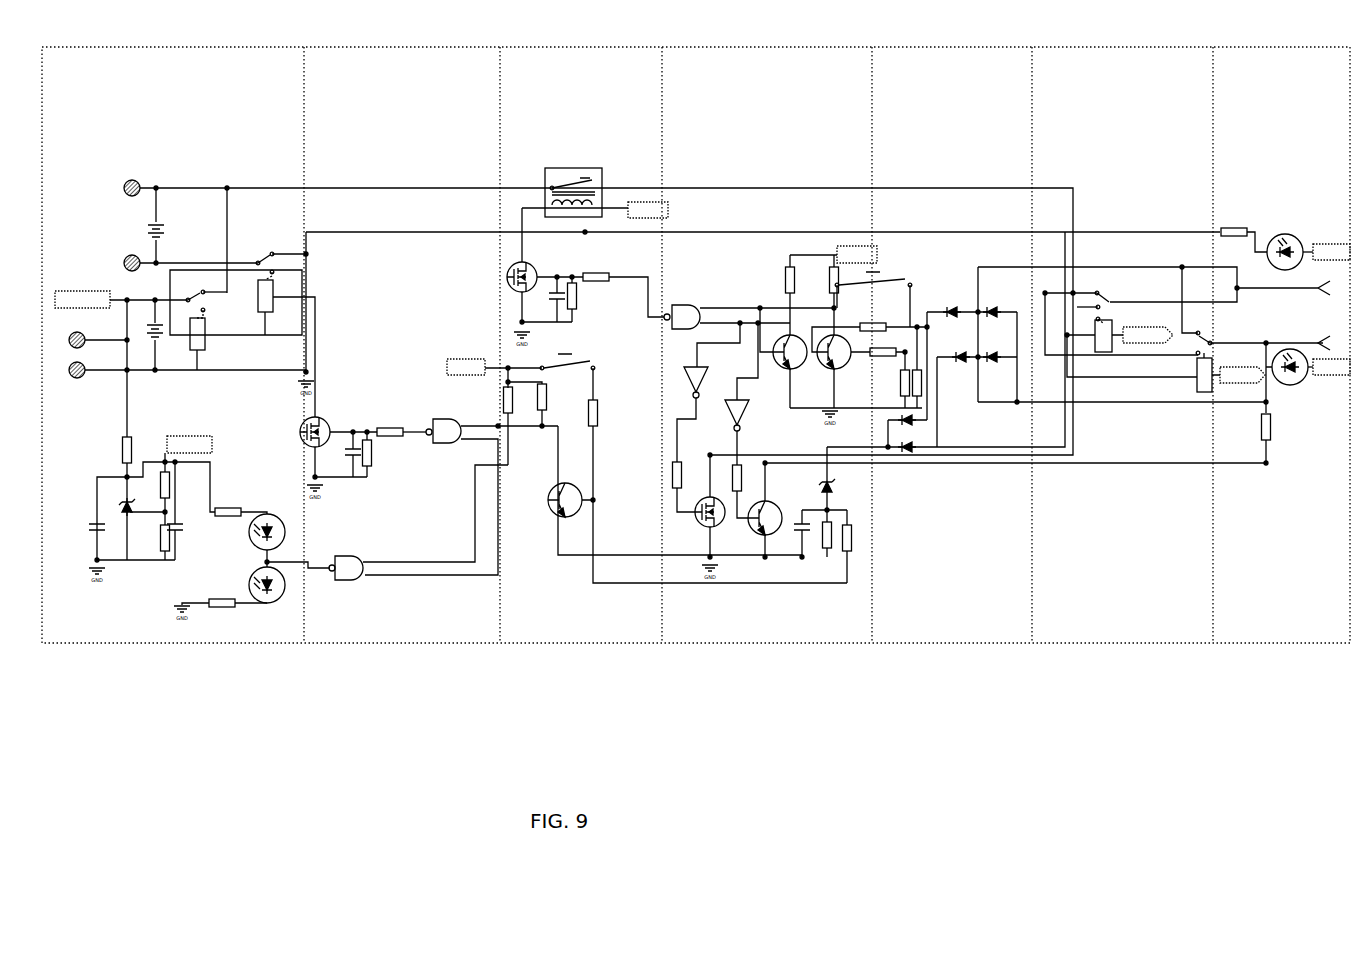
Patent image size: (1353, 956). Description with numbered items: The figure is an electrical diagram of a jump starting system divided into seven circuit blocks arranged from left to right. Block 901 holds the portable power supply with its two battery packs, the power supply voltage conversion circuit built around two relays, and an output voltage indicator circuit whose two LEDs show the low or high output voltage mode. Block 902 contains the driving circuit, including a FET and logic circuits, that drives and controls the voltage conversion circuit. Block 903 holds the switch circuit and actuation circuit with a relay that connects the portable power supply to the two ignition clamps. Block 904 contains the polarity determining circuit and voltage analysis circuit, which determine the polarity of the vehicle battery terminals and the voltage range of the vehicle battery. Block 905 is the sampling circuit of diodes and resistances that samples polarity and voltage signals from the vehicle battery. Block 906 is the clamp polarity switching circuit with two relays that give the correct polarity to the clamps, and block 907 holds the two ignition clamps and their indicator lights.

The circuit block 901 is at (192, 366).
The circuit block 902 is at (429, 341).
The circuit block 903 is at (647, 343).
The circuit block 904 is at (799, 343).
The circuit block 905 is at (1061, 280).
The circuit block 906 is at (1183, 255).
The circuit block 907 is at (1285, 284).